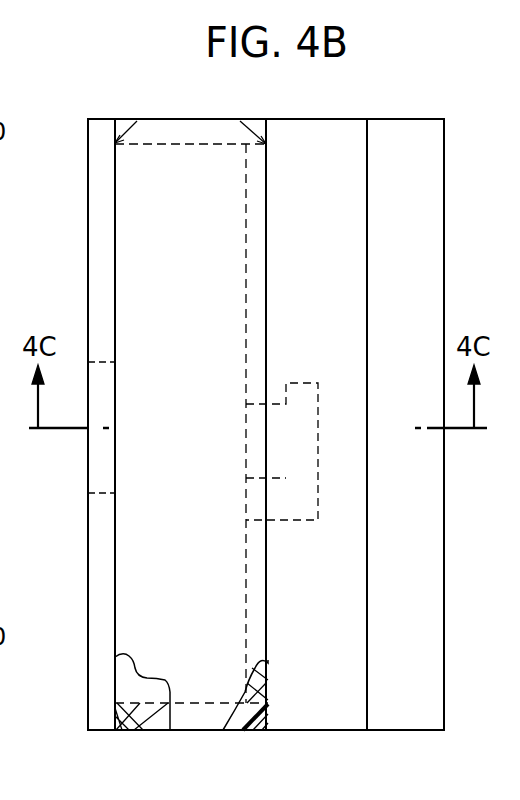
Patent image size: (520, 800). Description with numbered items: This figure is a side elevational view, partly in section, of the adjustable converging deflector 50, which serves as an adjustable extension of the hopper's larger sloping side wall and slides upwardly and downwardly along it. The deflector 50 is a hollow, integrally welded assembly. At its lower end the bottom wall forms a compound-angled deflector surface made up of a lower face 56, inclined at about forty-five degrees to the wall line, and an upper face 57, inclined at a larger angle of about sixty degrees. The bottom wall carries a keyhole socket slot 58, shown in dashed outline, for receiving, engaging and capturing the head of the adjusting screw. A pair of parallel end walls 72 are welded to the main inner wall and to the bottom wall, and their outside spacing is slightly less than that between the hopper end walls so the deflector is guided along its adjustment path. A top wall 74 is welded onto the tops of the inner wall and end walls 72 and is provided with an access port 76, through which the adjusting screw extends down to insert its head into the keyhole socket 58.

The adjustable converging deflector 50 is at (394, 98).
The lower face 56 is at (424, 581).
The upper face 57 is at (339, 581).
The keyhole socket slot 58 is at (288, 449).
The end walls 72 is at (174, 133).
The top wall 74 is at (100, 271).
The access port 76 is at (91, 494).